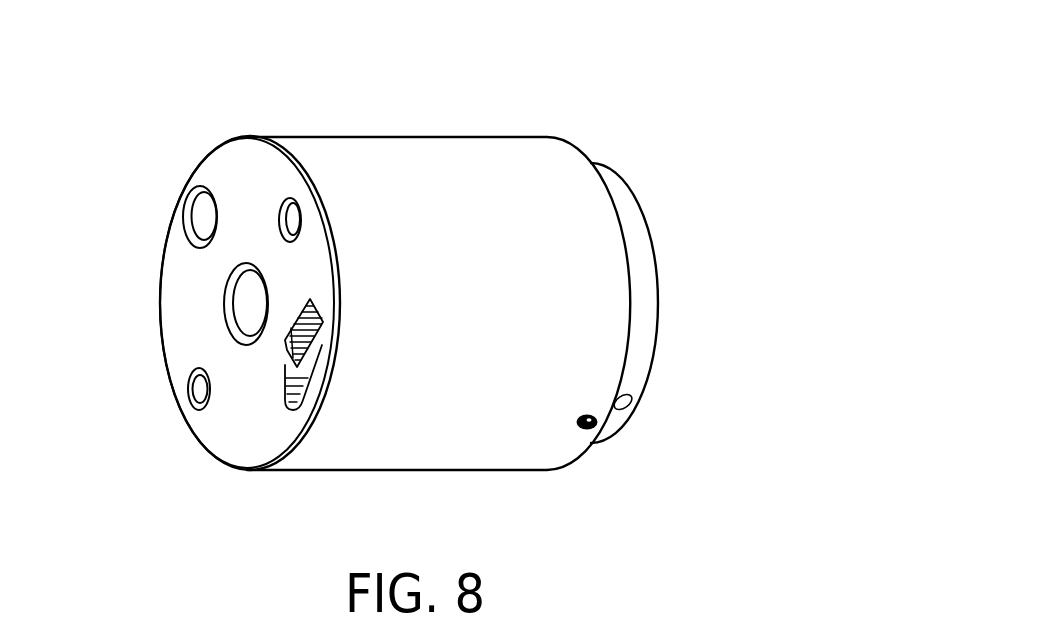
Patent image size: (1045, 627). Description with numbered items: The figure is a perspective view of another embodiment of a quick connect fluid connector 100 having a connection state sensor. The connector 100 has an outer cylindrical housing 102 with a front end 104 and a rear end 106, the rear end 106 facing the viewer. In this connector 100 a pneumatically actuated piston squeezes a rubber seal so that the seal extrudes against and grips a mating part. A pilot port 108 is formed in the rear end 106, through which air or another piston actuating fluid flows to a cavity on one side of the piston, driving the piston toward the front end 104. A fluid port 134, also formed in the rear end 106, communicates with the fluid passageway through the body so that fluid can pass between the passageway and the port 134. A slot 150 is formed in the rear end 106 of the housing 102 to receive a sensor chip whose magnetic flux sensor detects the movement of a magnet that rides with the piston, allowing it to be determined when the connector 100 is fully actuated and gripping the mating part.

The fluid connector 100 is at (403, 291).
The outer cylindrical housing 102 is at (520, 430).
The front end 104 is at (513, 167).
The rear end 106 is at (318, 448).
The pilot port 108 is at (200, 222).
The fluid port 134 is at (240, 300).
The slot 150 is at (287, 388).